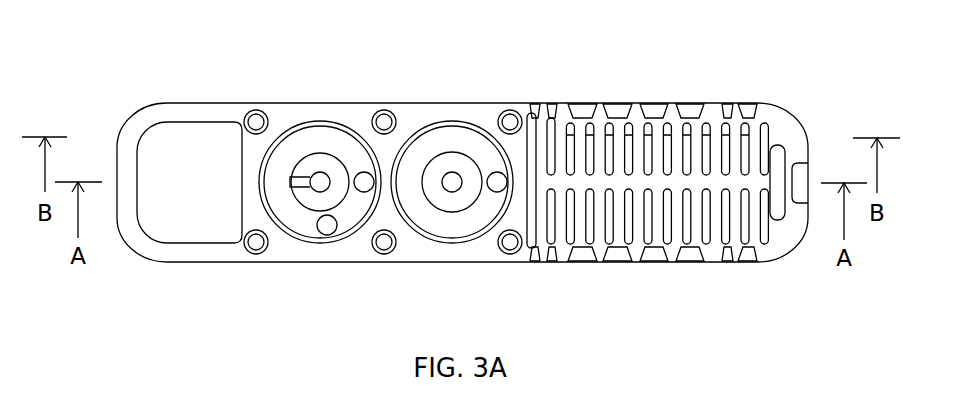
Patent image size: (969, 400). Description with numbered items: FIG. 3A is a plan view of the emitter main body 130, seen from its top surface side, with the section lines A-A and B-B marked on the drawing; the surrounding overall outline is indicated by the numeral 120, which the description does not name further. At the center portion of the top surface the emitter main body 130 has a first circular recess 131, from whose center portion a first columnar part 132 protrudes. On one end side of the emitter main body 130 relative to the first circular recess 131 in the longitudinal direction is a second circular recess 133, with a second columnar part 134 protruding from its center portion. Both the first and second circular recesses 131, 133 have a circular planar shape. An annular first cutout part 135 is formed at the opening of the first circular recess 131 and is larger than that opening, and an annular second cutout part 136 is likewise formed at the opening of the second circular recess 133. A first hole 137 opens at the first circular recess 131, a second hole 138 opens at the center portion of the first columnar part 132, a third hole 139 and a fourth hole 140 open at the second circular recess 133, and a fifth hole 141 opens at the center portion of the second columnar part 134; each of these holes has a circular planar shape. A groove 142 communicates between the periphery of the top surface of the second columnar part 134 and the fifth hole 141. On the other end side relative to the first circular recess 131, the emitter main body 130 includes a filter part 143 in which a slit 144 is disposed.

The heat sink body 120 is at (826, 104).
The emitter main body 130 is at (180, 103).
The first circular recess 131 is at (445, 243).
The first columnar part 132 is at (450, 172).
The second circular recess 133 is at (355, 237).
The second columnar part 134 is at (332, 154).
The first cutout part 135 is at (479, 238).
The second cutout part 136 is at (290, 236).
The first hole 137 is at (496, 172).
The second hole 138 is at (448, 152).
The third hole 139 is at (365, 134).
The fourth hole 140 is at (328, 236).
The fifth hole 141 is at (315, 173).
The groove 142 is at (296, 174).
The filter part 143 is at (678, 180).
The slit 144 is at (568, 132).